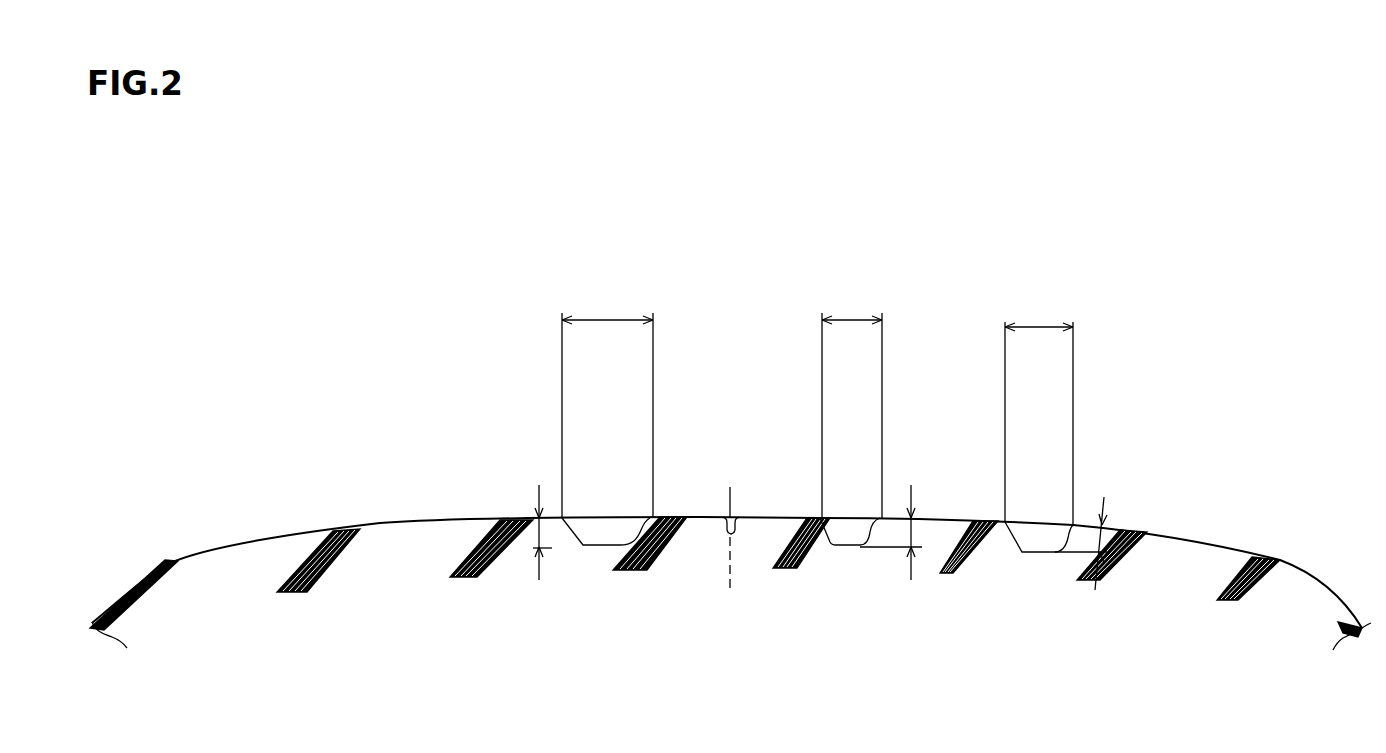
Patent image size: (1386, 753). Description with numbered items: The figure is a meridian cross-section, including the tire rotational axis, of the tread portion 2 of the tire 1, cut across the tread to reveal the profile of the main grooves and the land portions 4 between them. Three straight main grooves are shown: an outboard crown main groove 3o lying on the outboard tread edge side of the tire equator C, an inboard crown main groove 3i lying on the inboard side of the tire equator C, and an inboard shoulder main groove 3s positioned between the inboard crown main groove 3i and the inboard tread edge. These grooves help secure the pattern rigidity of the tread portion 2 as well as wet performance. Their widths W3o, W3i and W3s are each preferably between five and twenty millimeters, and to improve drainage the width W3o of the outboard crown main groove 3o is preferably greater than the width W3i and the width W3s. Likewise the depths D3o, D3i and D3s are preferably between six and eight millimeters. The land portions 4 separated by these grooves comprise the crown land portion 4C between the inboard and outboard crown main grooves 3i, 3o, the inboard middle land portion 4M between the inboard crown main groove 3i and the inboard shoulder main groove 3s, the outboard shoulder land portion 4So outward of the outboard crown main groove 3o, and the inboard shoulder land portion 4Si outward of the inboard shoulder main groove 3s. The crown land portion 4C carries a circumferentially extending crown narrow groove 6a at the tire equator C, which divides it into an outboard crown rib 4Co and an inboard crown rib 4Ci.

The pneumatic tire 1 is at (730, 511).
The tread portion 2 is at (1217, 463).
The outboard crown main groove 3o is at (608, 513).
The inboard crown main groove 3i is at (852, 513).
The inboard shoulder main groove 3s is at (1040, 518).
The land portion 4 is at (778, 464).
The outboard shoulder land portion 4So is at (425, 522).
The crown land portion 4C is at (721, 464).
The outboard crown rib 4Co is at (698, 518).
The inboard crown rib 4Ci is at (770, 518).
The inboard middle land portion 4M is at (947, 518).
The inboard shoulder land portion 4Si is at (1143, 520).
The crown narrow groove 6a is at (725, 513).
The tire equator C is at (732, 556).
The width of outboard crown main groove W3o is at (607, 402).
The width of inboard crown main groove W3i is at (852, 402).
The width of inboard shoulder main groove W3s is at (1039, 411).
The depth of outboard crown main groove D3o is at (537, 537).
The depth of inboard crown main groove D3i is at (913, 533).
The depth of inboard shoulder main groove D3s is at (1107, 547).